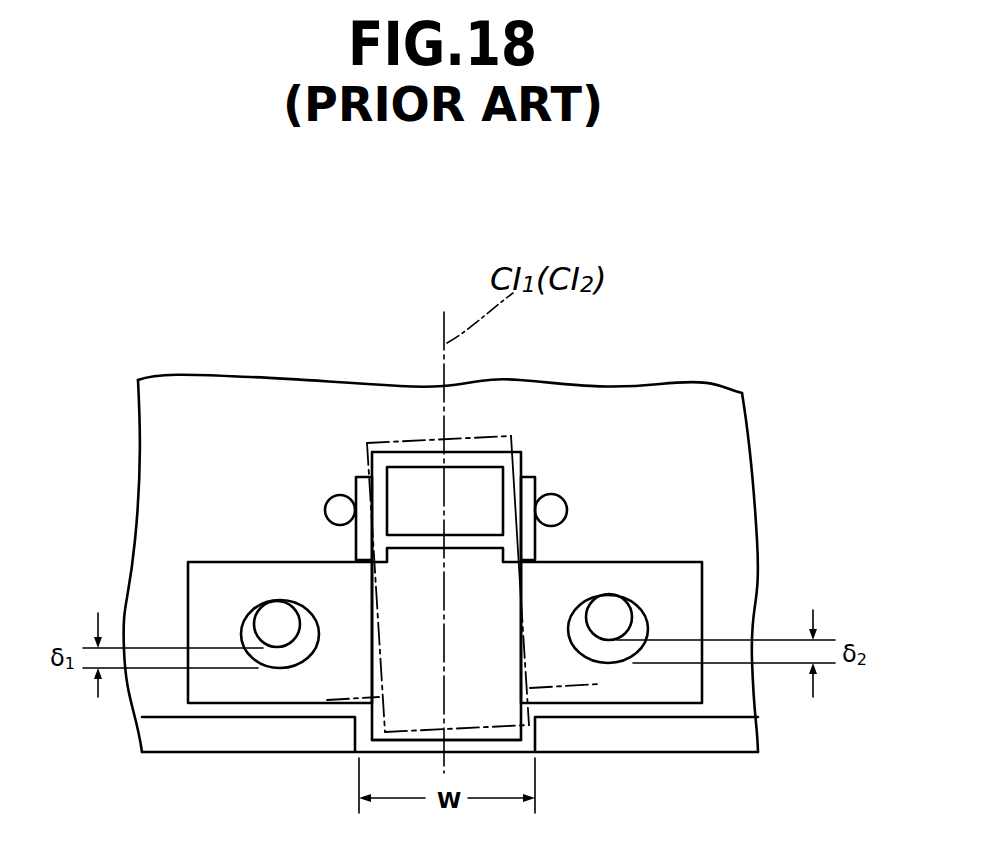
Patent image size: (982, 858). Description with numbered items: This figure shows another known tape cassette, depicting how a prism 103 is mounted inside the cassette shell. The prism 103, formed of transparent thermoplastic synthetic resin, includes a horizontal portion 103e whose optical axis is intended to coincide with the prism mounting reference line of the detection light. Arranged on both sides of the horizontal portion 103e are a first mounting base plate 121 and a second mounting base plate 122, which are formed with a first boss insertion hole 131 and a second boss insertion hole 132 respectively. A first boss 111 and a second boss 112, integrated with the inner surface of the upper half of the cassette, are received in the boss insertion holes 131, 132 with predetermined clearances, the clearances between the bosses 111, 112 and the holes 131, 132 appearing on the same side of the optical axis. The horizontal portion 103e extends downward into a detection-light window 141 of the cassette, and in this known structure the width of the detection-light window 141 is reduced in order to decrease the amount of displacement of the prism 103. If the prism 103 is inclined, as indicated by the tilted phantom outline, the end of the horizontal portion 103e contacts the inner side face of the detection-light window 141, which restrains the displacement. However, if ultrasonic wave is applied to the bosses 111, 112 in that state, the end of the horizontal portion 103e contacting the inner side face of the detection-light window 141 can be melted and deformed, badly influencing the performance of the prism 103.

The prism 103 is at (546, 473).
The horizontal portion 103e is at (477, 705).
The first boss 111 is at (270, 625).
The second boss 112 is at (620, 623).
The first mounting base plate 121 is at (225, 570).
The second mounting base plate 122 is at (658, 575).
The first boss insertion hole 131 is at (243, 622).
The second boss insertion hole 132 is at (648, 617).
The detection-light window 141 is at (373, 745).